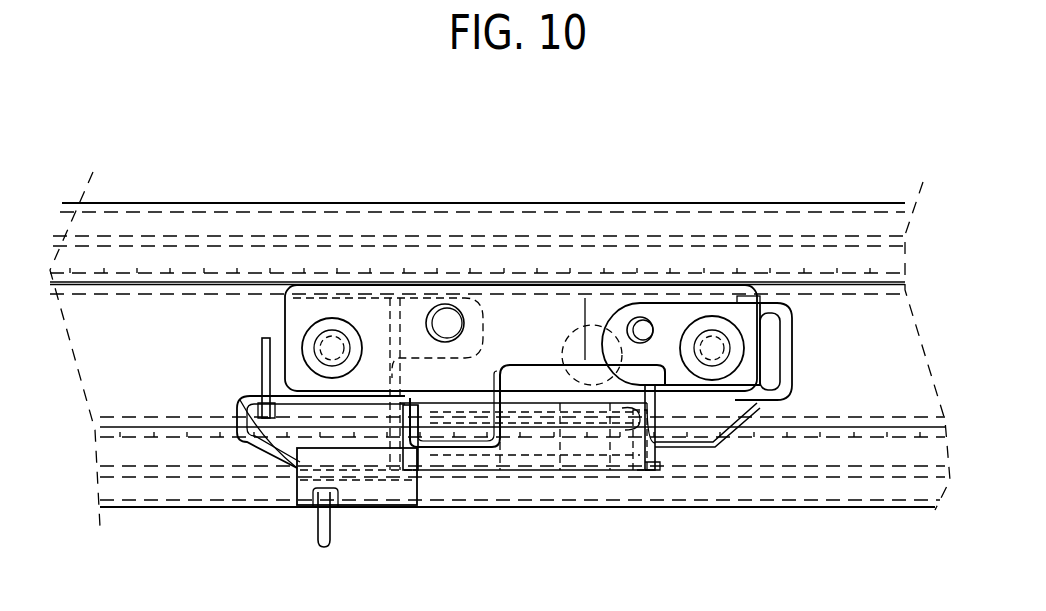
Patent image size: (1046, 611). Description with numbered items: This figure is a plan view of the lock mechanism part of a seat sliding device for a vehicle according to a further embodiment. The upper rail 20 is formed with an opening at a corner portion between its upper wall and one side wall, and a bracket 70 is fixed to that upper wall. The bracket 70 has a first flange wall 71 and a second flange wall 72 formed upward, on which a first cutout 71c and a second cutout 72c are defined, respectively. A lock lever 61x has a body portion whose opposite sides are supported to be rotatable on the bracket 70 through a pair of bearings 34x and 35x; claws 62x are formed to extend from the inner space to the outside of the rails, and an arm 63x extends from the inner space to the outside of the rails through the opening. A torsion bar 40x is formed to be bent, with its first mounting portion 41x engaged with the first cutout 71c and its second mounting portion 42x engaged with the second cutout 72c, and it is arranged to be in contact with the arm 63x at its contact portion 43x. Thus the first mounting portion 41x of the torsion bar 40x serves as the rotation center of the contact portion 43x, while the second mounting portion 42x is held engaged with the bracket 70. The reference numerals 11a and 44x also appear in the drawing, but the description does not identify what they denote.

The upper rail 20 is at (415, 199).
The bracket 70 is at (551, 278).
The first flange wall 71 is at (263, 337).
The first cutout 71c is at (250, 393).
The first mounting portion 41x is at (253, 395).
The contact portion 43x is at (318, 540).
The arm 63x is at (372, 487).
The bearing 34x is at (411, 472).
The lower frame 11a is at (495, 472).
The claws 62x is at (560, 472).
The lock lever 61x is at (642, 472).
The bearing 35x is at (660, 467).
The stopper stub 44x is at (767, 400).
The second flange wall 72 is at (762, 373).
The second cutout 72c is at (773, 313).
The second mounting portion 42x is at (750, 307).
The torsion bar 40x is at (741, 354).